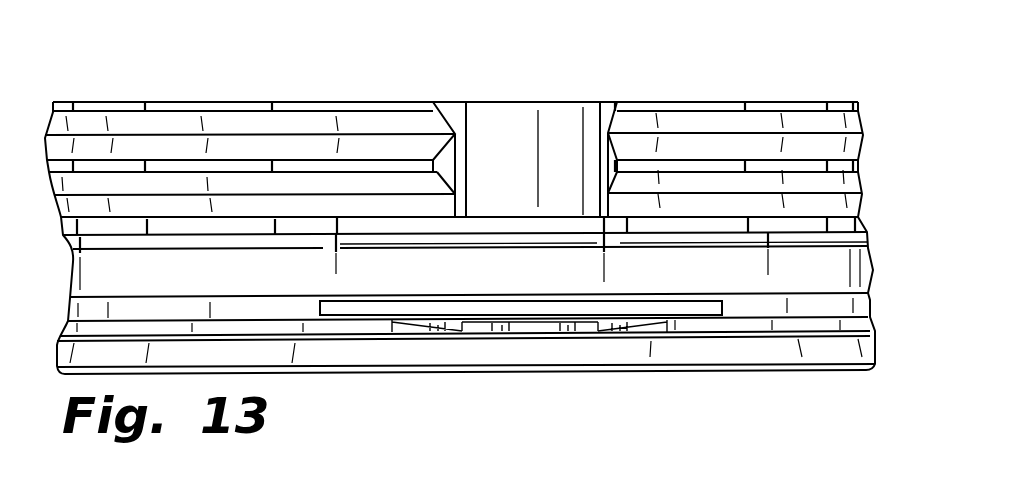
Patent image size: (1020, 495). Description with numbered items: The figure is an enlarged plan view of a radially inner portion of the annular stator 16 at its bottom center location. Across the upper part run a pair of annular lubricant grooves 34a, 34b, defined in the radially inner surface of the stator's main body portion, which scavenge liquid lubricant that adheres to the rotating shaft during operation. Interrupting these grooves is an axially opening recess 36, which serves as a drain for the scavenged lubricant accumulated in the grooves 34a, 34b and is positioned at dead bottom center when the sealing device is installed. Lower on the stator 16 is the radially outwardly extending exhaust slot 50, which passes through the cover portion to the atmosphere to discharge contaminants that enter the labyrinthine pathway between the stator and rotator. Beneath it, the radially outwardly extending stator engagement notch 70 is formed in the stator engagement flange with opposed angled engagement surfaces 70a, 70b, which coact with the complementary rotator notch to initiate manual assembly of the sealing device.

The annular stator 16 is at (673, 89).
The axially opening recess 36 is at (508, 140).
The annular lubricant groove 34a is at (740, 135).
The annular lubricant groove 34b is at (803, 188).
The exhaust slot 50 is at (688, 307).
The stator engagement notch 70 is at (537, 327).
The angled engagement surface 70a is at (632, 323).
The angled engagement surface 70b is at (445, 322).